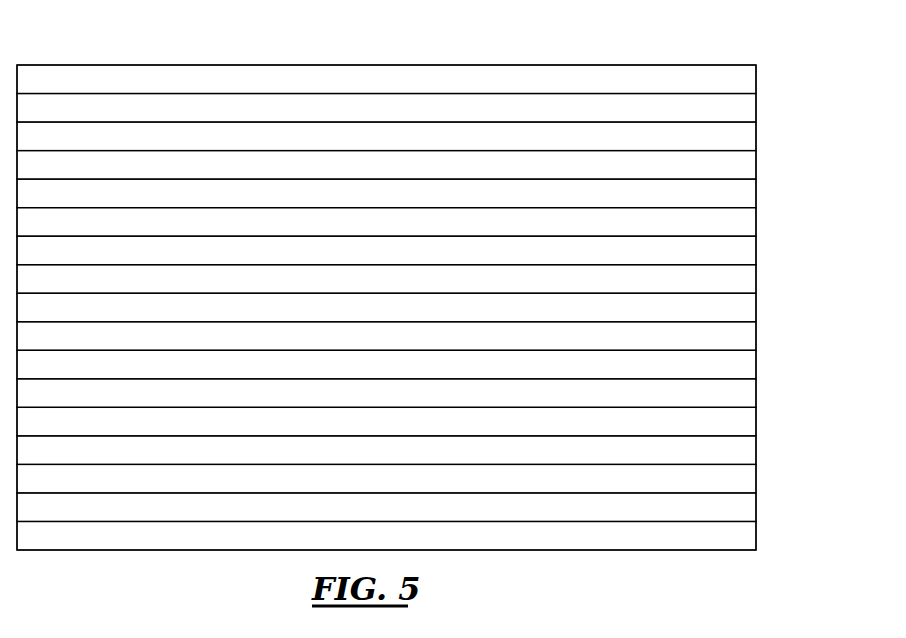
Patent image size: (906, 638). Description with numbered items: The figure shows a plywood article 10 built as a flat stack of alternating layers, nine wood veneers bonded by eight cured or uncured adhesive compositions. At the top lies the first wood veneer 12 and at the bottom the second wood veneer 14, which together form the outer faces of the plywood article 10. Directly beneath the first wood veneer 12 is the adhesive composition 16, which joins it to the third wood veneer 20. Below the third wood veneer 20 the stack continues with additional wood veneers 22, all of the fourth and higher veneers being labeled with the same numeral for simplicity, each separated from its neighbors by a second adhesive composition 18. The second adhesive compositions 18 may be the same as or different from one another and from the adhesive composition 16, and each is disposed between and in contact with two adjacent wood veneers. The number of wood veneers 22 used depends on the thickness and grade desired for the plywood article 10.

The plywood article 10 is at (79, 22).
The first wood veneer 12 is at (746, 77).
The second wood veneer 14 is at (746, 539).
The adhesive composition 16 is at (746, 106).
The second adhesive composition 18 is at (746, 164).
The third wood veneer 20 is at (746, 135).
The additional wood veneer 22 is at (746, 193).